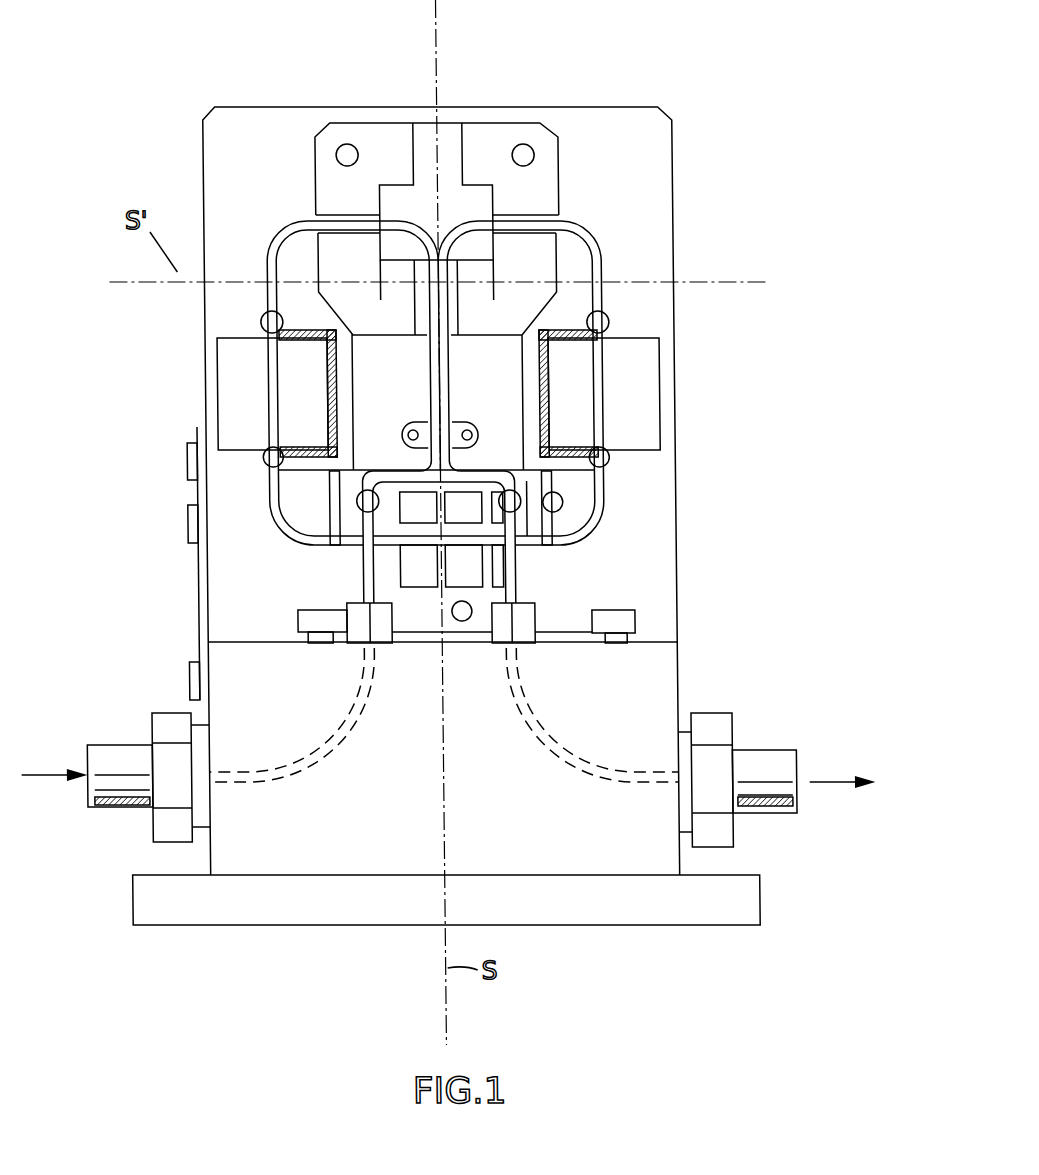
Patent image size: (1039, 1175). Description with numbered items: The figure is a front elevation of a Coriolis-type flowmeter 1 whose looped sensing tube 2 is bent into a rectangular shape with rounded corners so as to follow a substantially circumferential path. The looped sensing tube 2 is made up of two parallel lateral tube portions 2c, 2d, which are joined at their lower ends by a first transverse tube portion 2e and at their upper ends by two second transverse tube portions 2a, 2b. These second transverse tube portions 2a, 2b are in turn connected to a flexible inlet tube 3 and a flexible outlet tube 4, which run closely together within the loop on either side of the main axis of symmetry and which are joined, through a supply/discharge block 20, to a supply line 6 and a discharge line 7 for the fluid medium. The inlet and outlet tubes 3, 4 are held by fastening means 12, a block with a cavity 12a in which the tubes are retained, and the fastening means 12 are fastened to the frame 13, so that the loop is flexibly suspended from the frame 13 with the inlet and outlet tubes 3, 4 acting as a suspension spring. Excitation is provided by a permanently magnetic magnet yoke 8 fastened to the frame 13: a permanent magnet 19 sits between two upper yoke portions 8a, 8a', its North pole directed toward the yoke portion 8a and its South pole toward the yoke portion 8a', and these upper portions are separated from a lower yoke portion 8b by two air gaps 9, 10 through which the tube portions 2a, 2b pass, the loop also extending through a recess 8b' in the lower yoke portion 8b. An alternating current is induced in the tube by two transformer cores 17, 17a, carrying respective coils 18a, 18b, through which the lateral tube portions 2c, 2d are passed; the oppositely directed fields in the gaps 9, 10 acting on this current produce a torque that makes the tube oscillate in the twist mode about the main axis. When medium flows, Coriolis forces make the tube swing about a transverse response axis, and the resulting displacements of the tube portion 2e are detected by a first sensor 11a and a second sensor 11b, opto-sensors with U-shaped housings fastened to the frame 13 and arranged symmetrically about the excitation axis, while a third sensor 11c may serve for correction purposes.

The flowmeter 1 is at (722, 153).
The looped sensing tube 2 is at (600, 292).
The second transverse tube portion 2a is at (351, 221).
The second transverse tube portion 2b is at (512, 221).
The lateral tube portion 2c is at (265, 497).
The lateral tube portion 2d is at (602, 487).
The first transverse tube portion 2e is at (366, 553).
The inlet tube 3 is at (424, 373).
The outlet tube 4 is at (436, 382).
The supply line 6 is at (114, 807).
The discharge line 7 is at (770, 783).
The magnet yoke 8 is at (376, 118).
The upper yoke portion 8a is at (325, 110).
The upper yoke portion 8a' is at (517, 107).
The lower yoke portion 8b is at (298, 284).
The recess 8b' is at (461, 284).
The air gap 9 is at (314, 212).
The air gap 10 is at (555, 212).
The first sensor 11a is at (411, 565).
The second sensor 11b is at (458, 567).
The third sensor 11c is at (523, 567).
The fastening means 12 is at (404, 427).
The cavity 12a is at (451, 427).
The frame 13 is at (640, 268).
The transformer core 17 is at (239, 370).
The transformer core 17a is at (639, 366).
The coil 18a is at (301, 340).
The coil 18b is at (573, 342).
The permanent magnet 19 is at (435, 107).
The supply/discharge block 20 is at (321, 843).